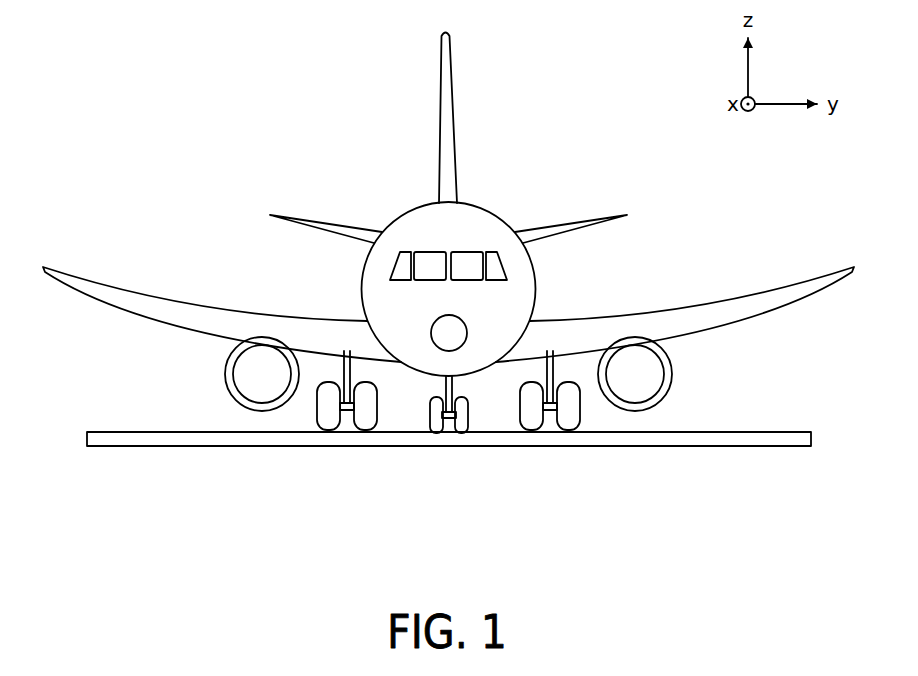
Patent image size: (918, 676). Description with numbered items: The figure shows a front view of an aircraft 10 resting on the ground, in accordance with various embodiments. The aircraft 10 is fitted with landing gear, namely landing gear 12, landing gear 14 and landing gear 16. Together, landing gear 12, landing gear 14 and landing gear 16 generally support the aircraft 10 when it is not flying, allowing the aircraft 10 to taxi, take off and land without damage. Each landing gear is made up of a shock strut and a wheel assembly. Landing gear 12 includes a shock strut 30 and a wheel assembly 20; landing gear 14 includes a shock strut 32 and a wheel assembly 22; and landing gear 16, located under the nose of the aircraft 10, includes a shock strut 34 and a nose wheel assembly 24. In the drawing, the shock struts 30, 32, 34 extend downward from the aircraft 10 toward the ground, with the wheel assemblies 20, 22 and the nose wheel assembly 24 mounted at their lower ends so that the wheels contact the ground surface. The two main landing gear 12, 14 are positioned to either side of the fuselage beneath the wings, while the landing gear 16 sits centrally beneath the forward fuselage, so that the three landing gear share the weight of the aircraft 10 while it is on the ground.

The aircraft 10 is at (296, 123).
The landing gear 12 is at (590, 415).
The landing gear 14 is at (307, 415).
The landing gear 16 is at (502, 417).
The wheel assembly 20 is at (549, 414).
The wheel assembly 22 is at (345, 413).
The nose wheel assembly 24 is at (449, 421).
The shock strut 30 is at (547, 374).
The shock strut 32 is at (356, 377).
The shock strut 34 is at (445, 381).